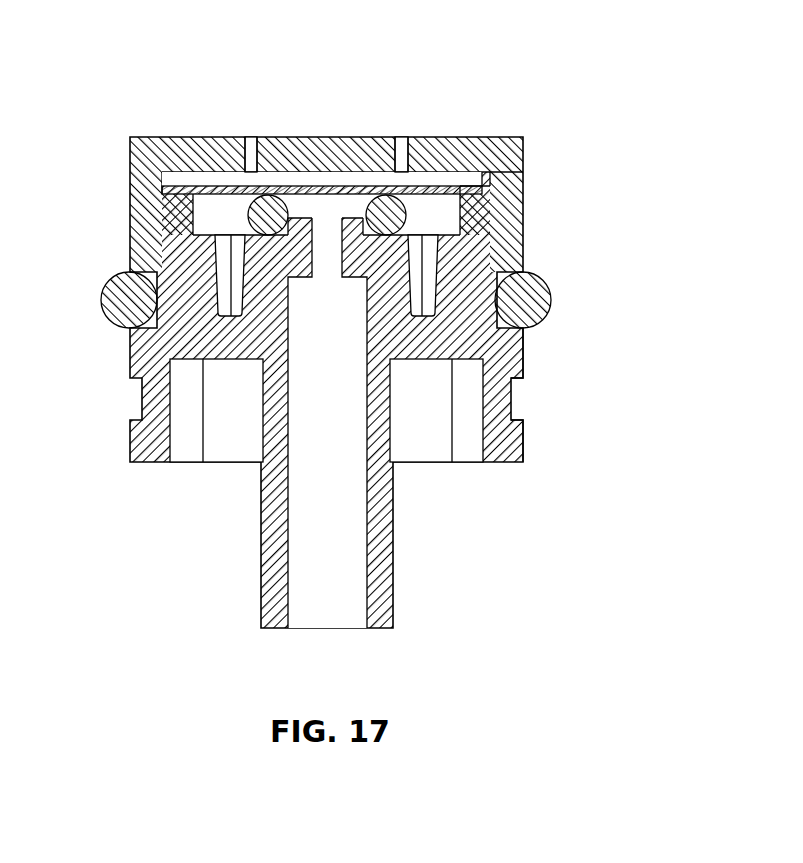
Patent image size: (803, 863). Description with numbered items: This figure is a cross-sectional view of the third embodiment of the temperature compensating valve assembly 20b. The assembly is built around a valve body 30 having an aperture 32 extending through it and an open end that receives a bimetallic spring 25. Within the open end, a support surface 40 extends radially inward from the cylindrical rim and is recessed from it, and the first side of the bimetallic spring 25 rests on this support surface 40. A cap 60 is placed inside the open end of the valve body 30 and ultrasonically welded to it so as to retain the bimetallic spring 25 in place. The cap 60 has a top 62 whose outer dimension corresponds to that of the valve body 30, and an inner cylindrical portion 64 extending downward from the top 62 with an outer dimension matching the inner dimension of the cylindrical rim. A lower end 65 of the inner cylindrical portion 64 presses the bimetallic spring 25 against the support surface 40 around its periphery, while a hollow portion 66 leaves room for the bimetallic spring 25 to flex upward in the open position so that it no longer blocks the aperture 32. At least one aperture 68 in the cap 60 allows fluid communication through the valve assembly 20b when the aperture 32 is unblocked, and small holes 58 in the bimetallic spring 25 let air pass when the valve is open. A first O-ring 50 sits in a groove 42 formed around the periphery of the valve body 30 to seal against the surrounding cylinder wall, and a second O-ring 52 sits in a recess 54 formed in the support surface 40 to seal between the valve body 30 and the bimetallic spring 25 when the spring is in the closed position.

The temperature compensating valve assembly 20b is at (527, 48).
The cap 60 is at (133, 137).
The support surface 40 is at (183, 162).
The small holes 58 is at (250, 198).
The aperture 68 is at (253, 170).
The hollow portion 66 is at (428, 180).
The bimetallic spring 25 is at (467, 170).
The top 62 is at (523, 150).
The inner cylindrical portion 64 is at (523, 175).
The lower end 65 is at (505, 210).
The second O-ring 52 is at (478, 236).
The recess 54 is at (203, 219).
The first O-ring 50 is at (553, 284).
The groove 42 is at (498, 335).
The valve body 30 is at (513, 444).
The aperture 32 is at (308, 448).